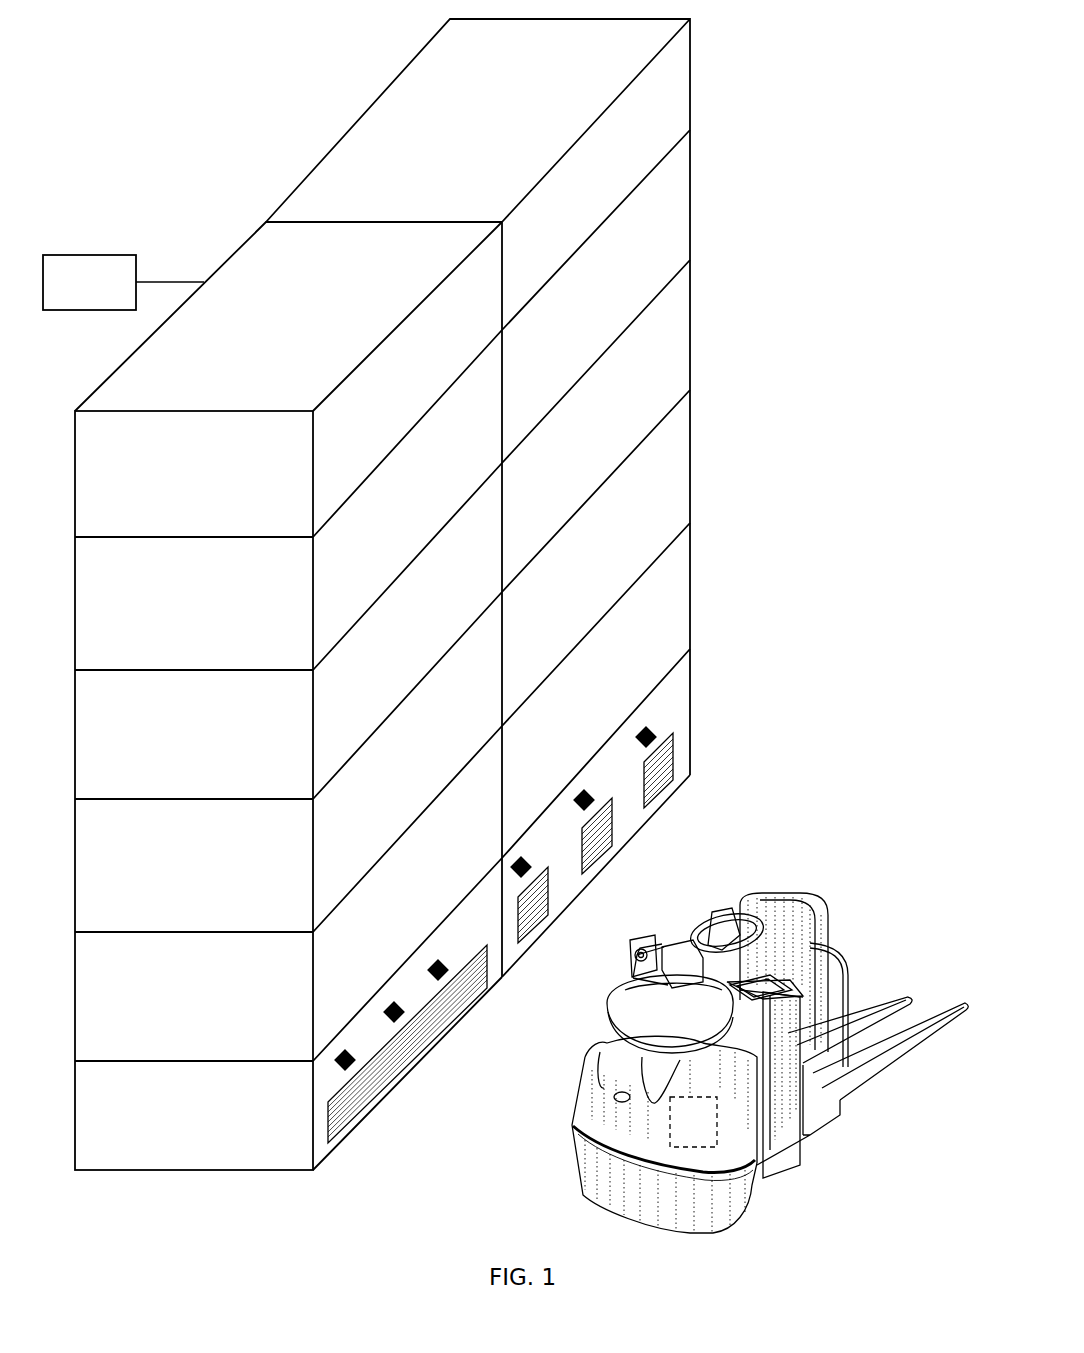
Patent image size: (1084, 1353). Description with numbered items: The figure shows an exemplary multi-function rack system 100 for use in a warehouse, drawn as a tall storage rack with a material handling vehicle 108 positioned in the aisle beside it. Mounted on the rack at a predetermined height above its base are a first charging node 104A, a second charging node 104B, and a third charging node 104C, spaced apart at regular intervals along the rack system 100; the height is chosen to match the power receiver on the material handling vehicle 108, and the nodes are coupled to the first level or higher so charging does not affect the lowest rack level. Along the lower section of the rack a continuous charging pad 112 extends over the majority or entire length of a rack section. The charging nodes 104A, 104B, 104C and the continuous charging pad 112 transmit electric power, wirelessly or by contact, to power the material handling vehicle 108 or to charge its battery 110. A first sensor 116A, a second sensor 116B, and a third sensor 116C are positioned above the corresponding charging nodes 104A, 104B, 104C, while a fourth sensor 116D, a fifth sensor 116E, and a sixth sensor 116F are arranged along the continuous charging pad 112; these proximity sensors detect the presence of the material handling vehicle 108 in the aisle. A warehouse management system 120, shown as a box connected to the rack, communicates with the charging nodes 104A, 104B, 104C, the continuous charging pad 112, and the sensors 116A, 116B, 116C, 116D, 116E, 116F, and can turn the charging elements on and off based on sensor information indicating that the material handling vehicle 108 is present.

The multi-function rack system 100 is at (797, 179).
The first charging node 104A is at (528, 933).
The second charging node 104B is at (588, 863).
The third charging node 104C is at (663, 787).
The material handling vehicle 108 is at (770, 1051).
The battery 110 is at (697, 1137).
The continuous charging pad 112 is at (410, 1062).
The first sensor 116A is at (532, 865).
The second sensor 116B is at (594, 800).
The third sensor 116C is at (655, 735).
The fourth sensor 116D is at (352, 1067).
The fifth sensor 116E is at (398, 1018).
The sixth sensor 116F is at (442, 977).
The warehouse management system 120 is at (86, 255).